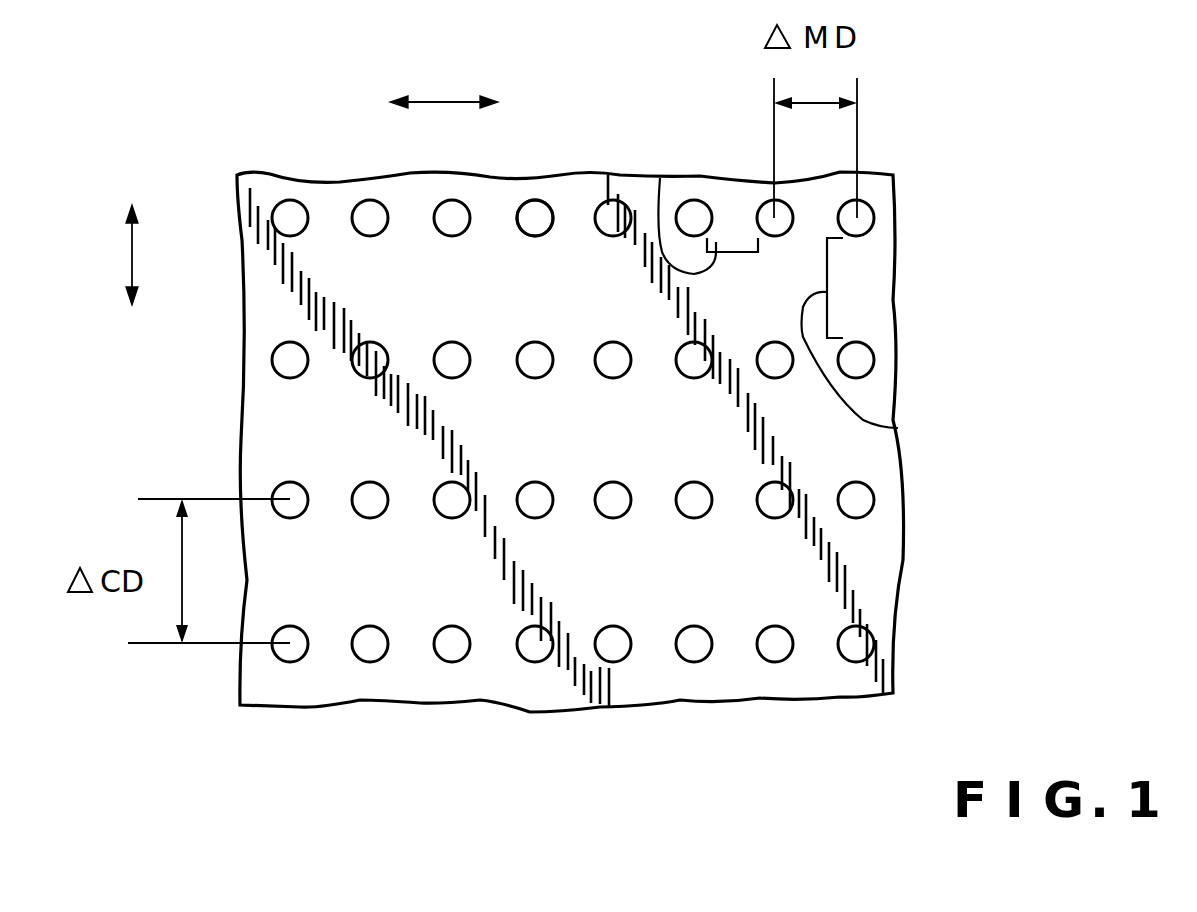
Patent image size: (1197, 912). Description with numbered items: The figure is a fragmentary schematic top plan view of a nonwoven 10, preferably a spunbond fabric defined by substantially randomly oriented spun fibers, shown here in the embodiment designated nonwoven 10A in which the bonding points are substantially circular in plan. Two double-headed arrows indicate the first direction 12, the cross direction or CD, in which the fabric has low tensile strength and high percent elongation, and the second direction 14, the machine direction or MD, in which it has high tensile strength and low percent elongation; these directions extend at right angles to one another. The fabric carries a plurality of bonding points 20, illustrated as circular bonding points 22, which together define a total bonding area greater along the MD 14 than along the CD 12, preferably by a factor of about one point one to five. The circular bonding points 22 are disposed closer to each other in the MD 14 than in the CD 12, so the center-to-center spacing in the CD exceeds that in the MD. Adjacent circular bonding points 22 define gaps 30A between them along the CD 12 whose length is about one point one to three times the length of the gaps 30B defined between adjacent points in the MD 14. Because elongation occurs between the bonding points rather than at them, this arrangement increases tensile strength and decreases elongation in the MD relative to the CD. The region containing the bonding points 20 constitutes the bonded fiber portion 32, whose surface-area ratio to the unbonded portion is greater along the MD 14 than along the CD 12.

The nonwoven 10 is at (300, 132).
The nonwoven 10A is at (233, 170).
The first direction 12 is at (130, 247).
The second direction 14 is at (444, 102).
The bonding points 20 is at (440, 343).
The circular bonding points 22 is at (607, 353).
The gaps 30A is at (898, 428).
The gaps 30B is at (660, 178).
The bonded fiber portion 32 is at (868, 353).